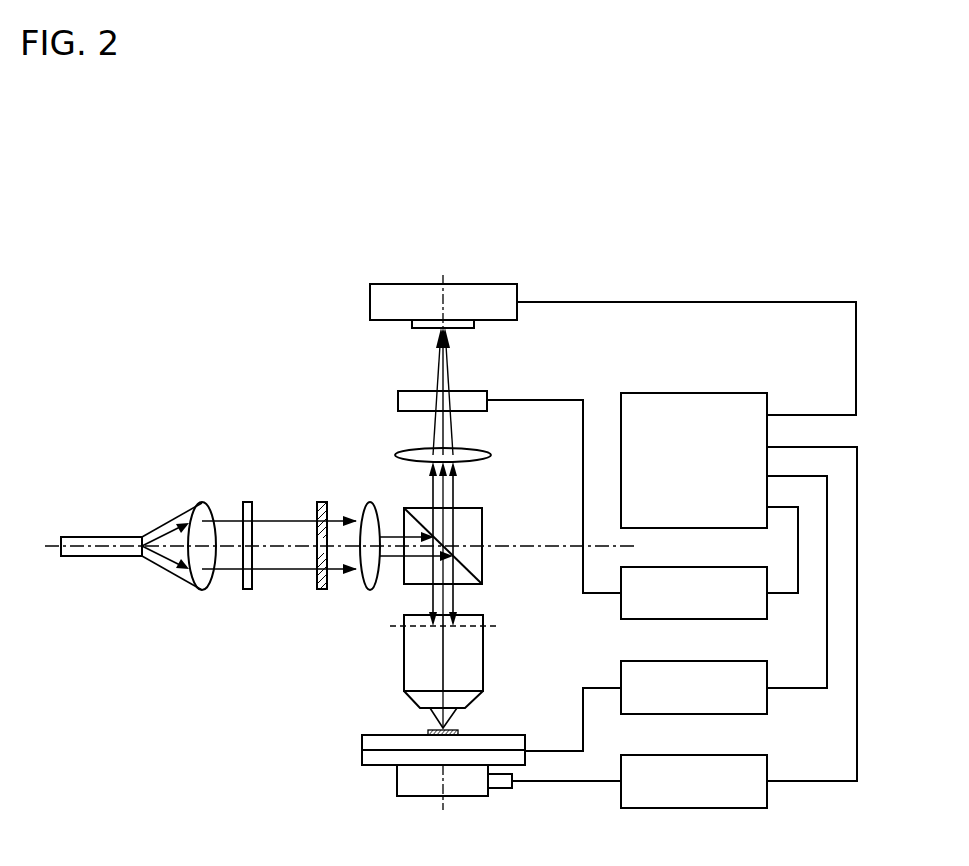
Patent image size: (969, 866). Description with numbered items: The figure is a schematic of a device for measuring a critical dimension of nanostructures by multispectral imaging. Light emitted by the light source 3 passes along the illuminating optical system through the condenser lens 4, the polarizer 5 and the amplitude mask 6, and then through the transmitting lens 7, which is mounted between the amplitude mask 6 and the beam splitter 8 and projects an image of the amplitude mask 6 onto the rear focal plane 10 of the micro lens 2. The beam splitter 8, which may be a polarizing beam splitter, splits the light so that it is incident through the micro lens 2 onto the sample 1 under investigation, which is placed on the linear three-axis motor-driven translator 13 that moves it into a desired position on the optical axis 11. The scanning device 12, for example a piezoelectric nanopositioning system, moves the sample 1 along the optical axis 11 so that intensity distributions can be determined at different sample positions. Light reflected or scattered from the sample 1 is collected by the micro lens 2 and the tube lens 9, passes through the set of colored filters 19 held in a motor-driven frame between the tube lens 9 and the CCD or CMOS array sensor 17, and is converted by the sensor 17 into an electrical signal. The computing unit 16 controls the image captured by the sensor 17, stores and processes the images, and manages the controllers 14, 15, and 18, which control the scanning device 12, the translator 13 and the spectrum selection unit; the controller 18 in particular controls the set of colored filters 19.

The sample 1 is at (459, 733).
The micro lens 2 is at (484, 655).
The light source 3 is at (100, 536).
The condenser lens 4 is at (202, 501).
The polarizer 5 is at (247, 501).
The amplitude mask 6 is at (321, 501).
The transmitting lens 7 is at (369, 501).
The beam splitter 8 is at (484, 522).
The tube lens 9 is at (492, 455).
The rear focal plane 10 is at (400, 627).
The optical axis 11 is at (443, 668).
The scanning device 12 is at (361, 744).
The linear three-axis motor-driven translator 13 is at (396, 781).
The controller 14 is at (698, 661).
The controller 15 is at (698, 755).
The computing unit 16 is at (698, 393).
The CCD or CMOS array sensor 17 is at (518, 294).
The controller 18 is at (698, 567).
The set of colored filters 19 is at (488, 397).